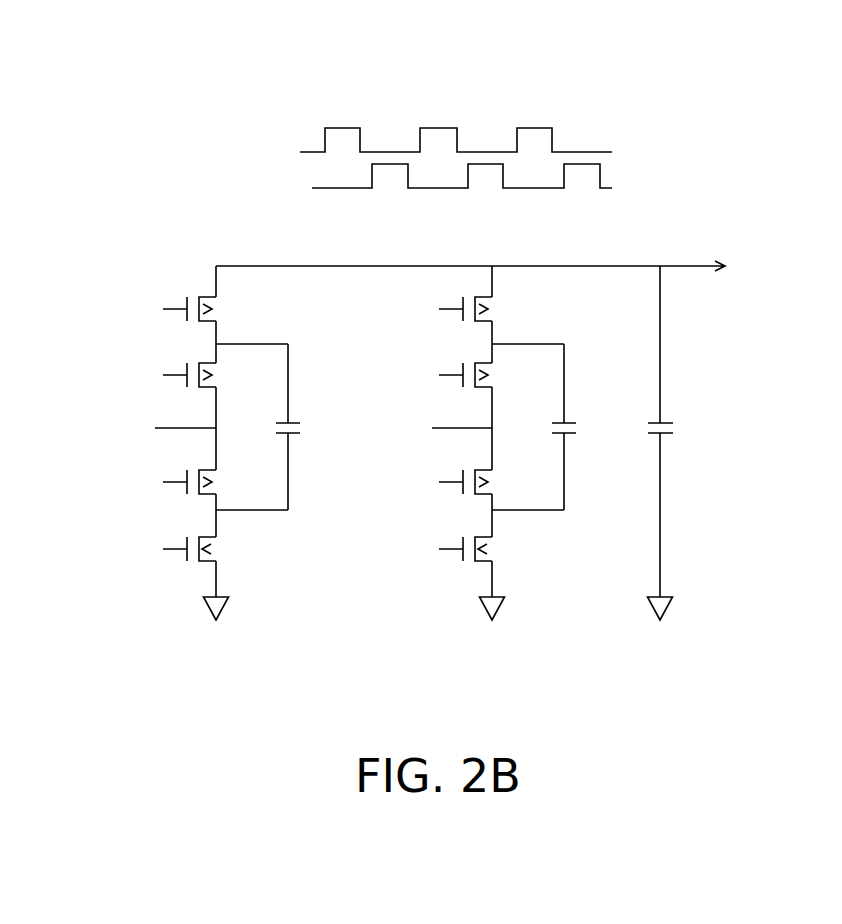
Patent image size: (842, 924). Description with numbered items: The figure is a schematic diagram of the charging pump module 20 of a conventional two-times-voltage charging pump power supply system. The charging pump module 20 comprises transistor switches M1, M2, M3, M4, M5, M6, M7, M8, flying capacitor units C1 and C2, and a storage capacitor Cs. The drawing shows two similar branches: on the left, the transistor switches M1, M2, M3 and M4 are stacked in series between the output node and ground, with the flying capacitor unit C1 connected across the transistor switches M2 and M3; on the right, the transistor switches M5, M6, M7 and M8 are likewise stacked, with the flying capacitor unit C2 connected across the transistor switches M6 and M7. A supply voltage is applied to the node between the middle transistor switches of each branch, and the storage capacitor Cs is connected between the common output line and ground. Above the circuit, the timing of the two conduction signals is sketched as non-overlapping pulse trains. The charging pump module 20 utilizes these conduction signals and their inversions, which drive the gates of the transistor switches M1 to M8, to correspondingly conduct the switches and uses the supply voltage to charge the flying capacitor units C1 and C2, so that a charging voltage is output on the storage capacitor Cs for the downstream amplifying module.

The charging pump module 20 is at (130, 62).
The transistor switch M1 is at (215, 310).
The transistor switch M2 is at (215, 377).
The transistor switch M3 is at (216, 482).
The transistor switch M4 is at (216, 550).
The transistor switch M5 is at (492, 310).
The transistor switch M6 is at (492, 377).
The transistor switch M7 is at (492, 482).
The transistor switch M8 is at (492, 550).
The flying capacitor unit C1 is at (312, 427).
The flying capacitor unit C2 is at (589, 427).
The storage capacitor Cs is at (683, 430).